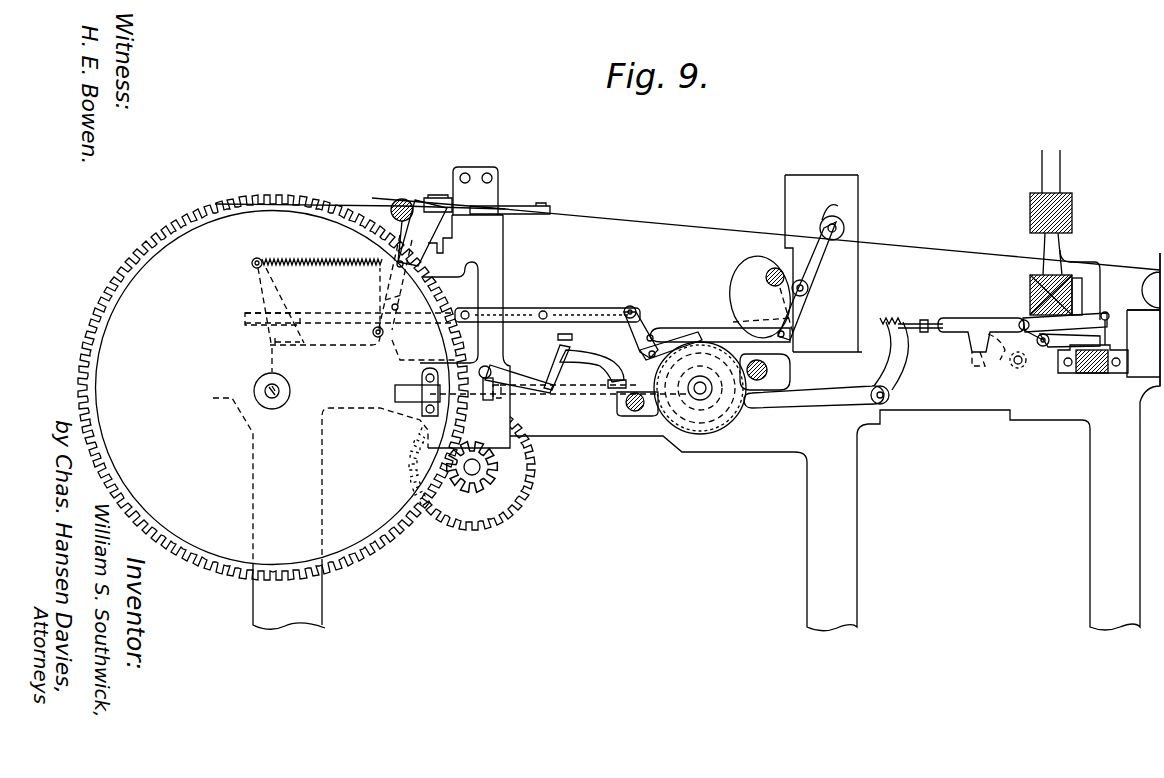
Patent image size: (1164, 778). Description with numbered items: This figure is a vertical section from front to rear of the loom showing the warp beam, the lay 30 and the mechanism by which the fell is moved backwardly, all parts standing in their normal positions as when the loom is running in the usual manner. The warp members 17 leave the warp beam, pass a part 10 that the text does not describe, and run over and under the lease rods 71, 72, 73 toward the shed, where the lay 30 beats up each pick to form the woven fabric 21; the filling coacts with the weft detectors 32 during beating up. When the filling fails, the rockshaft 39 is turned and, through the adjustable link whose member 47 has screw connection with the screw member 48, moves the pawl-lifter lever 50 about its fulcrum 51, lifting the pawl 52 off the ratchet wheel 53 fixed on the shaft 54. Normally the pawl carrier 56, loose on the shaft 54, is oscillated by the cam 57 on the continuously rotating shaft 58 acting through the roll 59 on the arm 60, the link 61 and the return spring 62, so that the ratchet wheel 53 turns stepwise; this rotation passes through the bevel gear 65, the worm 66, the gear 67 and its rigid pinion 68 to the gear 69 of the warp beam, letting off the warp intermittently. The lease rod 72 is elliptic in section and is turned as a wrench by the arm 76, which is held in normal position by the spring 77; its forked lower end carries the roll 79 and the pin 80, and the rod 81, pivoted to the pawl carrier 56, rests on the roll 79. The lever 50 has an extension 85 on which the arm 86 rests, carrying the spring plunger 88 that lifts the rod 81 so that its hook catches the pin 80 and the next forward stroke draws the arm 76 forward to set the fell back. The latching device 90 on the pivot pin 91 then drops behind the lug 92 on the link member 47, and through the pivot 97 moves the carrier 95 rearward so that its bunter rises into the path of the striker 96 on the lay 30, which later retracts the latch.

The belt pulley 10 is at (398, 203).
The warp members 17 is at (578, 212).
The woven fabric 21 is at (1120, 262).
The lay 30 is at (1030, 205).
The weft detectors 32 is at (1086, 268).
The rockshaft 39 is at (1045, 346).
The link member 47 is at (966, 320).
The link member 48 is at (935, 320).
The pawl-lifter lever 50 is at (814, 406).
The fulcrum 51 is at (874, 392).
The pawl 52 is at (656, 350).
The ratchet wheel 53 is at (680, 430).
The shaft 54 is at (701, 400).
The pawl carrier 56 is at (636, 314).
The cam 57 is at (735, 270).
The shaft 58 is at (770, 272).
The roll 59 is at (810, 292).
The arm 60 is at (822, 266).
The link 61 is at (703, 328).
The spring 62 is at (846, 226).
The bevel gear 65 is at (736, 418).
The worm 66 is at (492, 398).
The gear 67 is at (535, 478).
The pinion 68 is at (472, 492).
The warp beam gear 69 is at (370, 555).
The lease rod 71 is at (428, 198).
The lease rod 72 is at (473, 180).
The lease rod 73 is at (505, 206).
The arm 76 is at (420, 256).
The spring 77 is at (342, 266).
The roll 79 is at (376, 340).
The pin 80 is at (403, 300).
The rod 81 is at (538, 308).
The extension 85 is at (615, 388).
The arm 86 is at (525, 372).
The spring plunger 88 is at (573, 338).
The latching device 90 is at (1003, 358).
The pivot pin 91 is at (1020, 368).
The lug 92 is at (975, 364).
The carrier 95 is at (1058, 328).
The striker 96 is at (1082, 298).
The pivot 97 is at (1020, 324).